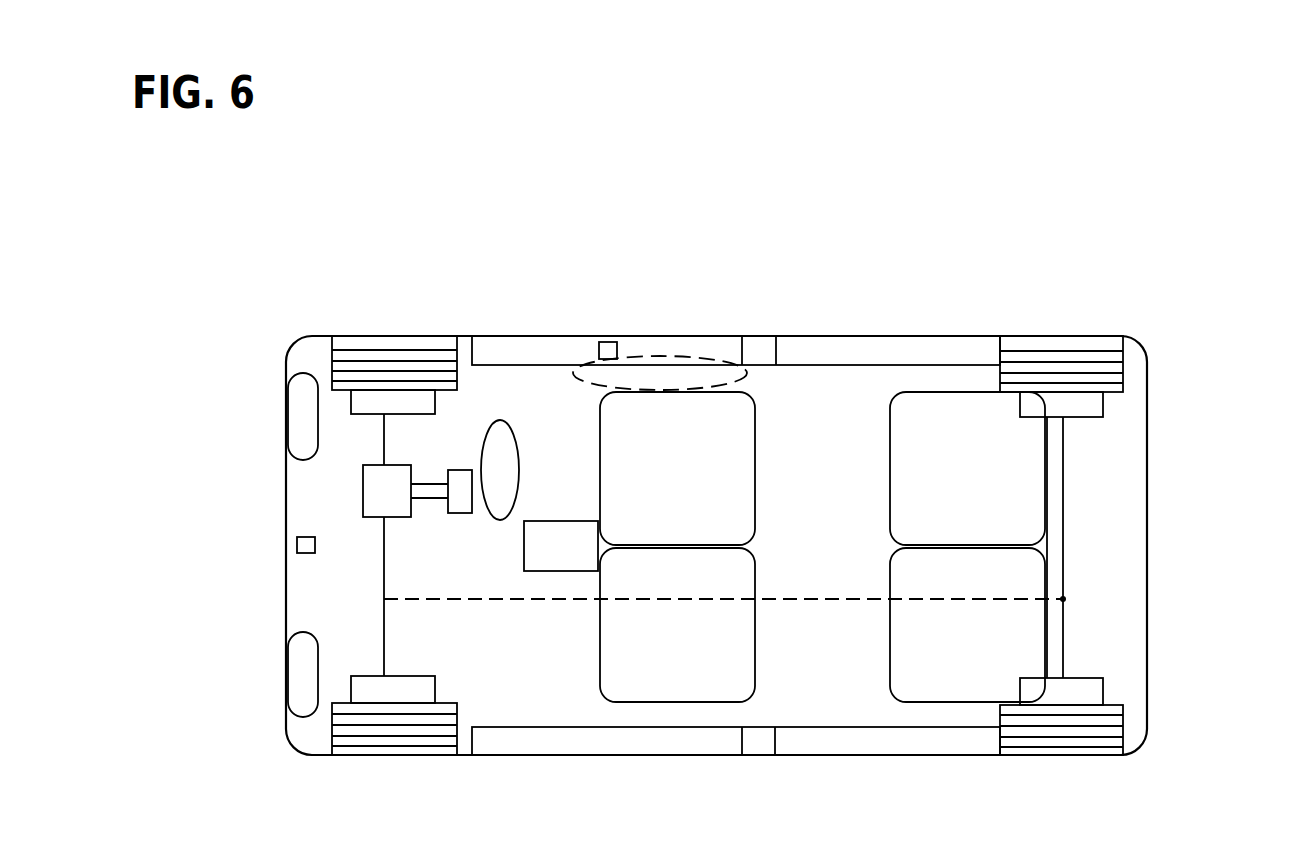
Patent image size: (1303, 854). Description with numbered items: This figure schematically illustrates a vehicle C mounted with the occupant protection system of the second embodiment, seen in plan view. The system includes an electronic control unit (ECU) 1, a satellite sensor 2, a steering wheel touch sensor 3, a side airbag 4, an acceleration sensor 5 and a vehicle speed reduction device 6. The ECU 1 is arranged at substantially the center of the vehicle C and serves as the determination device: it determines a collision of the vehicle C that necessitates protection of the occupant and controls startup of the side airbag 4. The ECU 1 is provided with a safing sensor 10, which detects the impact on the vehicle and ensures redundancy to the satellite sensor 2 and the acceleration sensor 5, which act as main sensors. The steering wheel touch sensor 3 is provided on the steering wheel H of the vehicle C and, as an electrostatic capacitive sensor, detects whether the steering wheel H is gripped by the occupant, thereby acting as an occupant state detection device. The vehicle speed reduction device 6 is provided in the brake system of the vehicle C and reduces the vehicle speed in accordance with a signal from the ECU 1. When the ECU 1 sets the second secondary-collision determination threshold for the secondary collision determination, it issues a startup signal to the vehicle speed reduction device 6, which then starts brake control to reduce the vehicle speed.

The vehicle C is at (1195, 300).
The electronic control unit (ECU) 1 is at (530, 606).
The safing sensor 10 is at (548, 555).
The satellite sensor 2 is at (607, 355).
The steering wheel touch sensor 3 is at (536, 385).
The steering wheel H is at (493, 447).
The side airbag 4 is at (673, 380).
The acceleration sensor 5 is at (308, 545).
The vehicle speed reduction device 6 is at (384, 599).